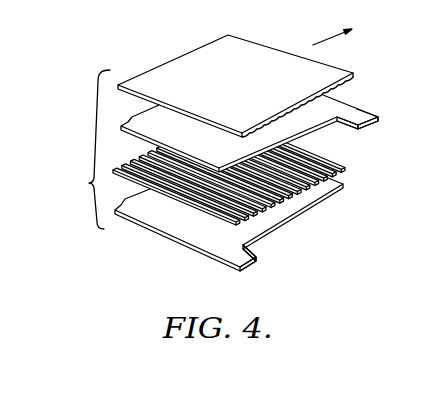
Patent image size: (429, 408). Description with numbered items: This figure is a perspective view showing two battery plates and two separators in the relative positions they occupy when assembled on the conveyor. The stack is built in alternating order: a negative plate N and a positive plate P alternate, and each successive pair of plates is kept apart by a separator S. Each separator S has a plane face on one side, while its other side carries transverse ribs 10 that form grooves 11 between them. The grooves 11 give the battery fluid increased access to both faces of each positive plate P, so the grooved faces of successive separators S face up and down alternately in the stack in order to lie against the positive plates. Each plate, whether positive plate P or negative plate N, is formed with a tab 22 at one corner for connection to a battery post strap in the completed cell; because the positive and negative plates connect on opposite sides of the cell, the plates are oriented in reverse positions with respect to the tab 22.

The separator S is at (250, 154).
The positive plate P is at (309, 121).
The negative plate N is at (277, 223).
The tab 22 is at (363, 115).
The transverse ribs 10 is at (229, 195).
The grooves 11 is at (230, 211).